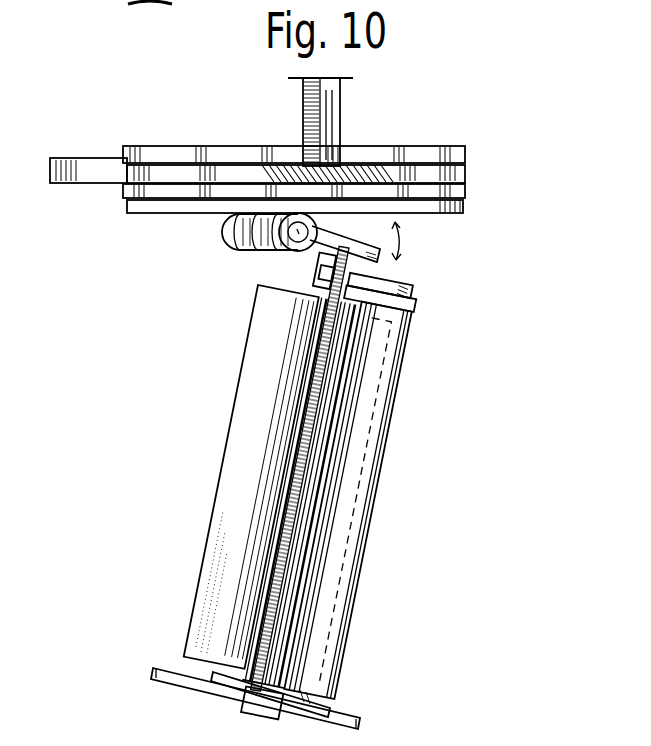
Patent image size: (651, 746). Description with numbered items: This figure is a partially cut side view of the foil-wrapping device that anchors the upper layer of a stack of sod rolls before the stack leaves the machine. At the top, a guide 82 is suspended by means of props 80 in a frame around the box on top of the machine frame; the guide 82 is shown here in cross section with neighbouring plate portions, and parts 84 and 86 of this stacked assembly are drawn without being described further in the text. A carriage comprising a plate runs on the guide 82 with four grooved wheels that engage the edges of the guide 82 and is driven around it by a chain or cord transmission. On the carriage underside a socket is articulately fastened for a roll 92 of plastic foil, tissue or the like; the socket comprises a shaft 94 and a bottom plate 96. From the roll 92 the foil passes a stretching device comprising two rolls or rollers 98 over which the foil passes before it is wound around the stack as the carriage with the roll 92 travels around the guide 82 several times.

The prop 80 is at (332, 112).
The guide 82 is at (352, 172).
The lower plate 84 is at (430, 205).
The upper plate 86 is at (427, 157).
The roll of plastic foil 92 is at (252, 392).
The shaft 94 is at (320, 268).
The bottom plate 96 is at (160, 668).
The rolls or rollers 98 is at (402, 327).